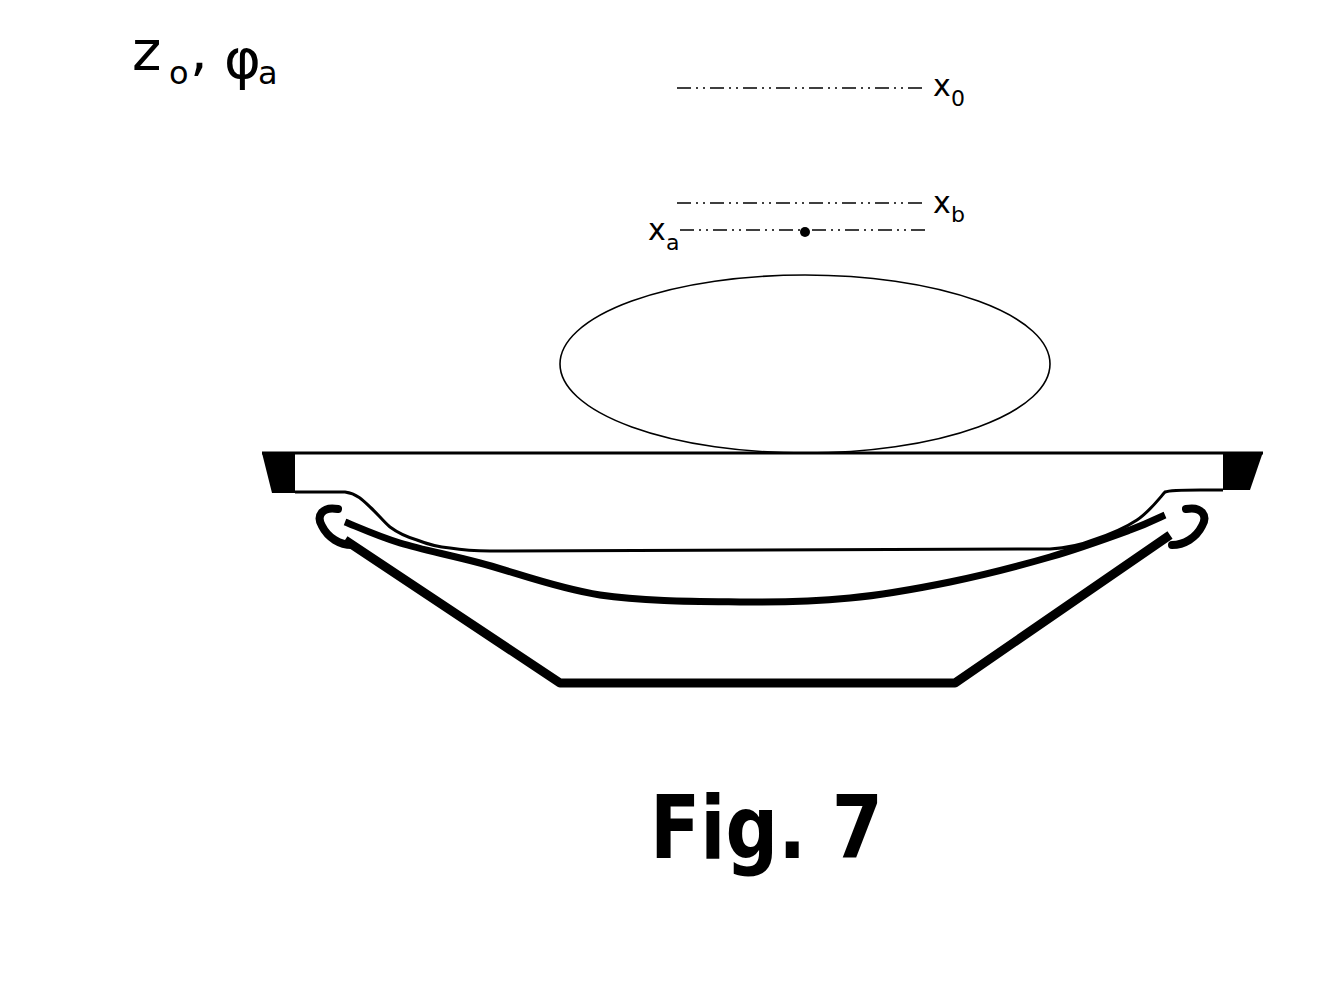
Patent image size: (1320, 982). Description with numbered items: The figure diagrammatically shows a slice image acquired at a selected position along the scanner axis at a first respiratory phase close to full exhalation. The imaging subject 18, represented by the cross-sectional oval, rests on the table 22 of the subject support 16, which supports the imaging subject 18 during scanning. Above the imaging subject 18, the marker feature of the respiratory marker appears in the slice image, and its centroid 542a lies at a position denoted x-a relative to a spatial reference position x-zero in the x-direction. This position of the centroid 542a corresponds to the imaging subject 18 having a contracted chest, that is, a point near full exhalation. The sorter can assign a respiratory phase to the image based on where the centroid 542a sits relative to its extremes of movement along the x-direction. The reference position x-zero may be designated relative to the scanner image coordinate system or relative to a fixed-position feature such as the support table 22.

The subject support 16 is at (1086, 661).
The imaging subject 18 is at (1000, 305).
The table 22 is at (1128, 452).
The centroid 542a is at (812, 235).